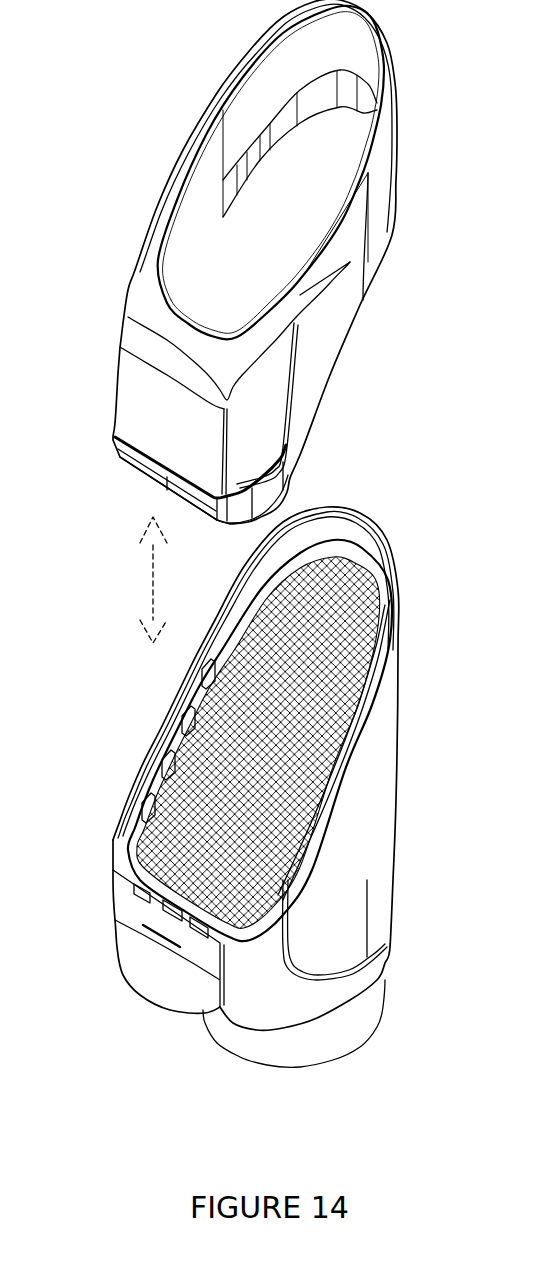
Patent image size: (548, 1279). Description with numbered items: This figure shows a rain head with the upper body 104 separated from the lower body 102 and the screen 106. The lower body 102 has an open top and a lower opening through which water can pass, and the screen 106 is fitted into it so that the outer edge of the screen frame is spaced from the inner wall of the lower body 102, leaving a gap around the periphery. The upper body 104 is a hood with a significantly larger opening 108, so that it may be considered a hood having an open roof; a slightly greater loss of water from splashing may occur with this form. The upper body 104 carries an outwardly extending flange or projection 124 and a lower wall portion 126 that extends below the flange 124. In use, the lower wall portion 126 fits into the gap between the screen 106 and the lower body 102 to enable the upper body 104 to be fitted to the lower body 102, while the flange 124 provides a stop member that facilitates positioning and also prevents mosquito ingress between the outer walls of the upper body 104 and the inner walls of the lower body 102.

The lower body 102 is at (163, 965).
The upper body 104 is at (157, 379).
The screen 106 is at (223, 722).
The opening 108 is at (231, 174).
The outwardly extending flange or projection 124 is at (116, 430).
The lower wall portion 126 is at (149, 473).